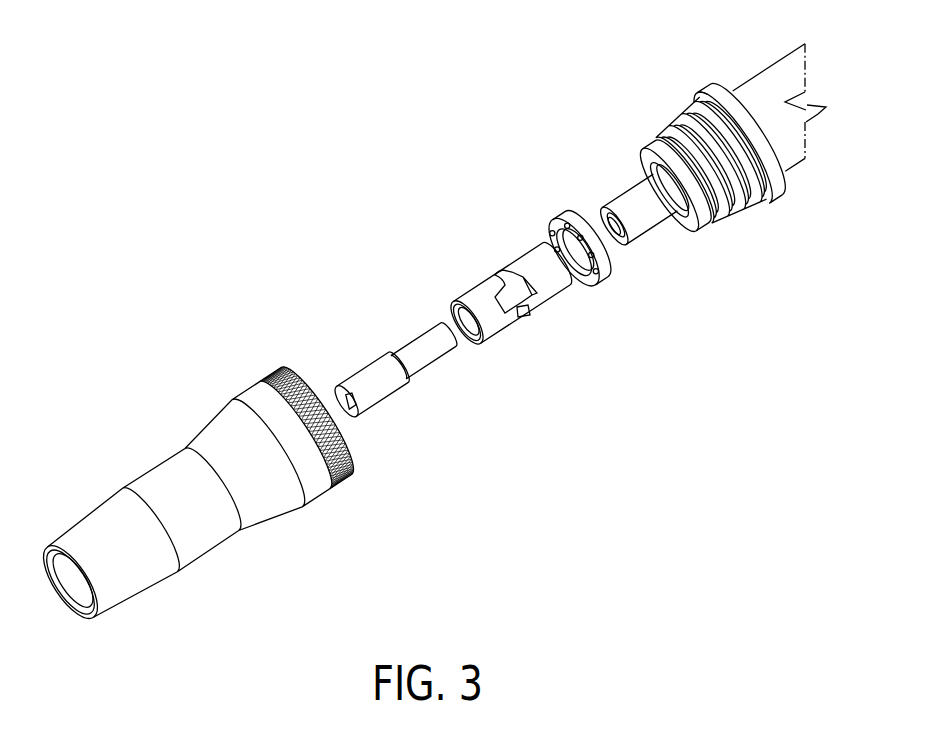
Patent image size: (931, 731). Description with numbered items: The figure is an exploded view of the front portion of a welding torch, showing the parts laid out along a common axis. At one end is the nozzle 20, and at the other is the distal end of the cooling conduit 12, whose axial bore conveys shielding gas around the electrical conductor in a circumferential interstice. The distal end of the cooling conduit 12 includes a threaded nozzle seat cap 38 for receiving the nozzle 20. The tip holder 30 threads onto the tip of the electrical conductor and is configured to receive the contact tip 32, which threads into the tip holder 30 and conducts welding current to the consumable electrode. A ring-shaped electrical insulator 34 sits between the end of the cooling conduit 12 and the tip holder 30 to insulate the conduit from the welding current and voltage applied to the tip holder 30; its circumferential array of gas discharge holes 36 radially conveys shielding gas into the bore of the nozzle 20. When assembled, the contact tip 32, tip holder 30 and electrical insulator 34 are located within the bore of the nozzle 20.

The cooling conduit 12 is at (745, 78).
The nozzle 20 is at (275, 520).
The tip holder 30 is at (553, 303).
The contact tip 32 is at (388, 398).
The ring-shaped electrical insulator 34 is at (618, 270).
The gas discharge holes 36 is at (566, 218).
The threaded nozzle seat cap 38 is at (668, 130).